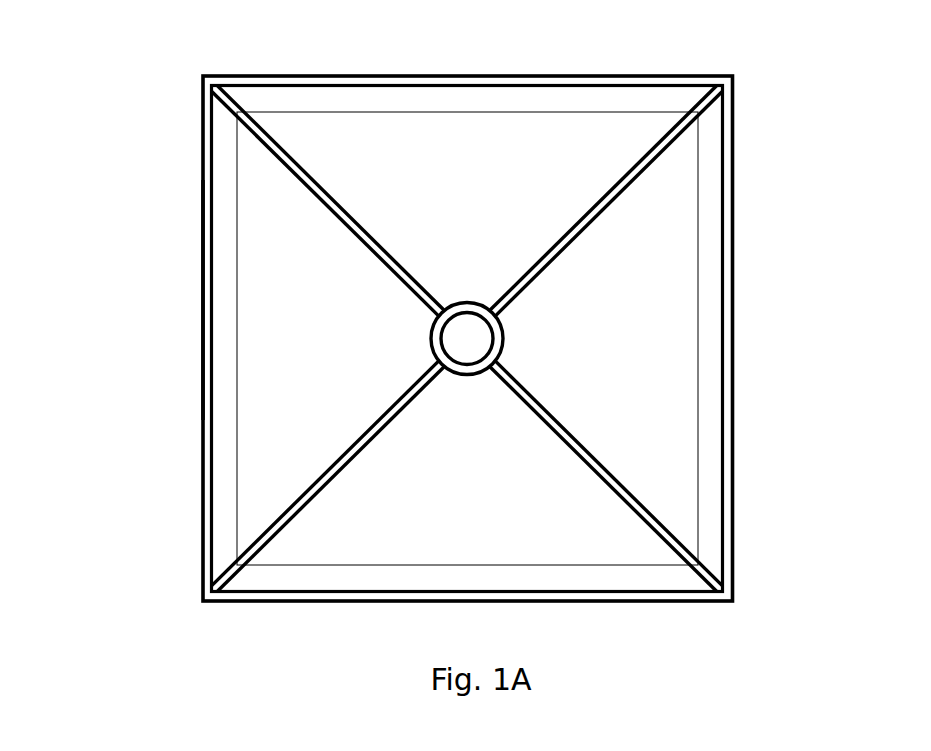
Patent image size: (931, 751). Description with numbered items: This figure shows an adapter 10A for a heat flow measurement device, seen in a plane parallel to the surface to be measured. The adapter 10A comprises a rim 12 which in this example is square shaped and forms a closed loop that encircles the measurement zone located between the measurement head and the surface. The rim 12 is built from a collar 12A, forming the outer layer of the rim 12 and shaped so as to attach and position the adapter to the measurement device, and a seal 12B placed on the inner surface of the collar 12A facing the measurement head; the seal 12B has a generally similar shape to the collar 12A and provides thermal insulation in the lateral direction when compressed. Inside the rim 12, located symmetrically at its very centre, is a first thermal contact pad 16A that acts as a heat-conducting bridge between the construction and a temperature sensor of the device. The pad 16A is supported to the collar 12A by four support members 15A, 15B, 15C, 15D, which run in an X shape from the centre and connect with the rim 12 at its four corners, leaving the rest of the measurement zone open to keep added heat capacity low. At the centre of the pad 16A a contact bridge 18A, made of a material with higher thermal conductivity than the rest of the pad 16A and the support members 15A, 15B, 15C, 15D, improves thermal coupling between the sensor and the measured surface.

The adapter 10A is at (144, 70).
The rim 12 is at (186, 243).
The collar 12A is at (203, 300).
The seal 12B is at (228, 412).
The support member 15A is at (277, 153).
The support member 15B is at (665, 145).
The support member 15C is at (672, 535).
The support member 15D is at (263, 527).
The first thermal contact pad 16A is at (455, 302).
The contact bridge 18A is at (475, 325).